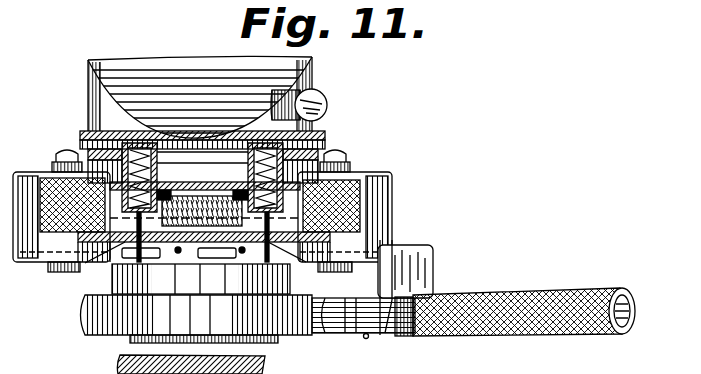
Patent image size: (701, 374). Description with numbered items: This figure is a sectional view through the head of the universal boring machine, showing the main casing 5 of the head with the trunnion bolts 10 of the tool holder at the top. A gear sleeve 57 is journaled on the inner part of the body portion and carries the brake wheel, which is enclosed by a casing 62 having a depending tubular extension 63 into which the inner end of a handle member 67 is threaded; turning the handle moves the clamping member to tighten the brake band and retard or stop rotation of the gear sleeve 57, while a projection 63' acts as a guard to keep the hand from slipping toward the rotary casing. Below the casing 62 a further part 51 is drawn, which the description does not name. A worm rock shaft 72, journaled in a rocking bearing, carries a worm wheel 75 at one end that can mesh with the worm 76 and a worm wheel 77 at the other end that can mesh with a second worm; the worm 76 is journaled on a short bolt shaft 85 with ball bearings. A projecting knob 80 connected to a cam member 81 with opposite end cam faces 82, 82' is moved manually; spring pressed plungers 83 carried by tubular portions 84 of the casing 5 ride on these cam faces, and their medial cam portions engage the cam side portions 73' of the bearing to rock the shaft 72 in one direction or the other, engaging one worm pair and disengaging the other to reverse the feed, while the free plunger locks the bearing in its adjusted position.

The main casing 5 is at (88, 98).
The trunnion bolts 10 is at (259, 271).
The tubular portions 84 is at (150, 145).
The short bolt shafts 85 is at (66, 152).
The worm wheel 77 is at (50, 178).
The worm 76 is at (372, 220).
The worm wheel 75 is at (360, 180).
The worm rock shaft 72 is at (205, 176).
The cam side portions 73' is at (205, 199).
The cam face 82 is at (105, 262).
The cam face 82' is at (291, 262).
The spring pressed plungers 83 is at (158, 244).
The projecting knob 80 is at (181, 256).
The cam member 81 is at (222, 250).
The gear sleeve 57 is at (110, 284).
The casing 62 is at (94, 332).
The base strip 51 is at (264, 343).
The tubular extension 63 is at (363, 334).
The projection 63' is at (426, 287).
The handle member 67 is at (556, 298).